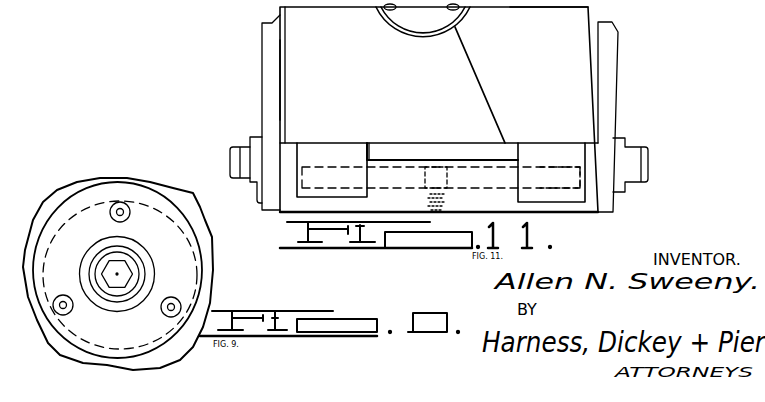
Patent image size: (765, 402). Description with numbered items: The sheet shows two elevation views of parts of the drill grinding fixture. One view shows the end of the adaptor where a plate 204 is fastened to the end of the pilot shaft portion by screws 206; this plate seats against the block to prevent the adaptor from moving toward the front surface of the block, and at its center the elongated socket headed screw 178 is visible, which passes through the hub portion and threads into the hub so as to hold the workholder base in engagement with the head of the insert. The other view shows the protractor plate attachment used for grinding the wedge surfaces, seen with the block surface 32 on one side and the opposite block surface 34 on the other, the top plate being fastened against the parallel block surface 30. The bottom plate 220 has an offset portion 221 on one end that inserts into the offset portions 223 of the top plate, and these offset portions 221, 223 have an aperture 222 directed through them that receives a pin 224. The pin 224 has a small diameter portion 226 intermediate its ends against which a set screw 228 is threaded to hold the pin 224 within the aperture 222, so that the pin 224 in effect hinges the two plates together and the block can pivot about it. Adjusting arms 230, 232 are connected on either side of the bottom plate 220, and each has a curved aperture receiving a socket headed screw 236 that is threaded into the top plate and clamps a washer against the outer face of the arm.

In FIG. 11, the bottom plate 220 is at (486, 106).
In FIG. 11, the adjusting arm 230 is at (268, 43).
In FIG. 11, the adjusting arm 232 is at (612, 47).
In FIG. 11, the socket headed screw 236 is at (241, 143).
In FIG. 11, the block surface 32 is at (284, 62).
In FIG. 11, the block surface 34 is at (589, 15).
In FIG. 11, the parallel surface 30 is at (401, 142).
In FIG. 11, the offset portions 223 is at (313, 142).
In FIG. 11, the aperture 222 is at (343, 162).
In FIG. 11, the small diameter portion 226 is at (440, 165).
In FIG. 11, the pin 224 is at (541, 167).
In FIG. 11, the set screw 228 is at (447, 200).
In FIG. 11, the offset portion 221 is at (507, 204).
In FIG. 9, the screws 206 is at (121, 204).
In FIG. 9, the plate 204 is at (161, 212).
In FIG. 9, the socket headed screw 178 is at (110, 257).